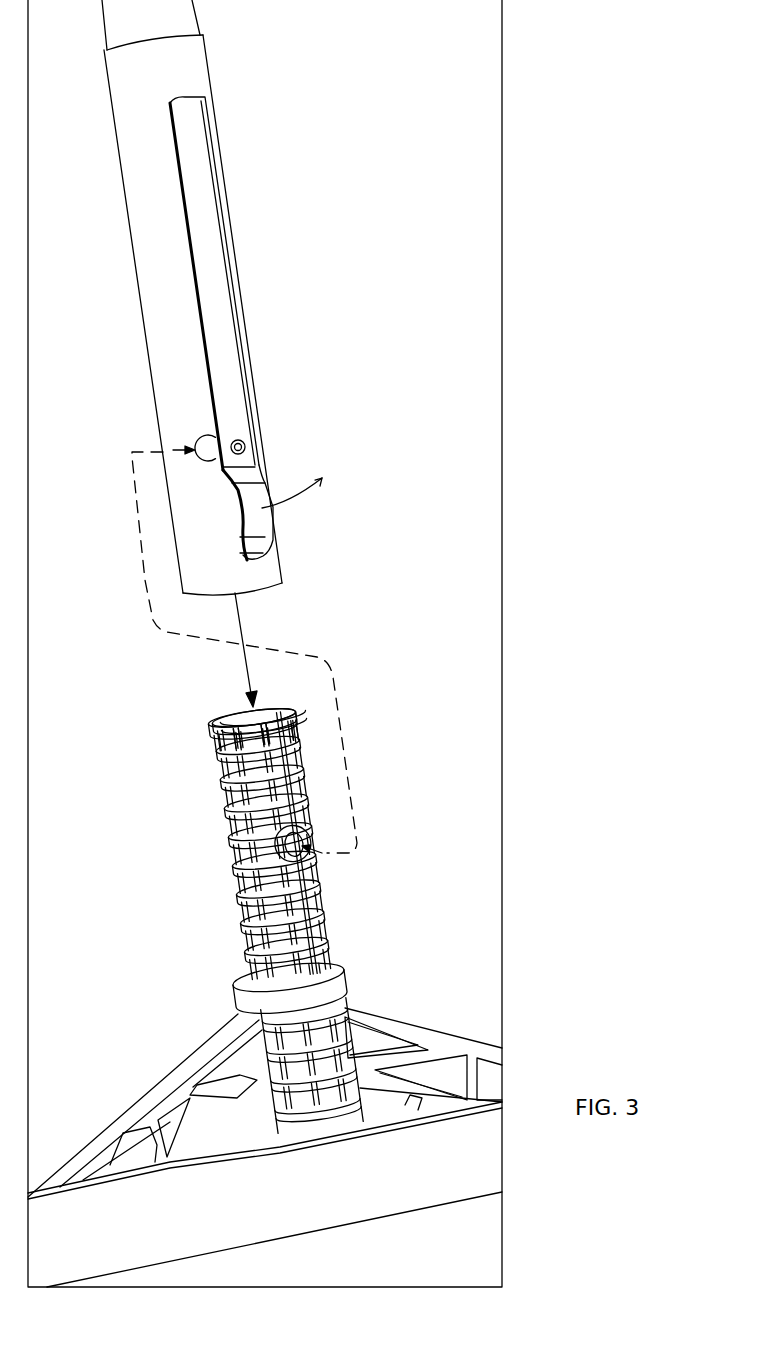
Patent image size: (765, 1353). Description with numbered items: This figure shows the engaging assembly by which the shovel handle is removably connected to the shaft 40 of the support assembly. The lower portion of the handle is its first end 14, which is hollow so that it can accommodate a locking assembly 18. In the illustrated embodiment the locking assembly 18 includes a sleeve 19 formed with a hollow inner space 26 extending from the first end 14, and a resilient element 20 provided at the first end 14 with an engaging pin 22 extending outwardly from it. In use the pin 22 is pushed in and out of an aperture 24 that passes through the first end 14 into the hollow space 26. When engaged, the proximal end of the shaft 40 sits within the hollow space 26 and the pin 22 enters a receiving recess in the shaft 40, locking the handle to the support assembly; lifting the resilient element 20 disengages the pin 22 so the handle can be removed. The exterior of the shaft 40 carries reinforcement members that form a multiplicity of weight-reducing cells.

The first end 14 is at (265, 570).
The locking assembly 18 is at (252, 236).
The sleeve 19 is at (150, 316).
The resilient element 20 is at (223, 318).
The engaging pin 22 is at (206, 436).
The aperture 24 is at (193, 447).
The hollow inner space 26 is at (262, 587).
The shaft 40 is at (327, 930).